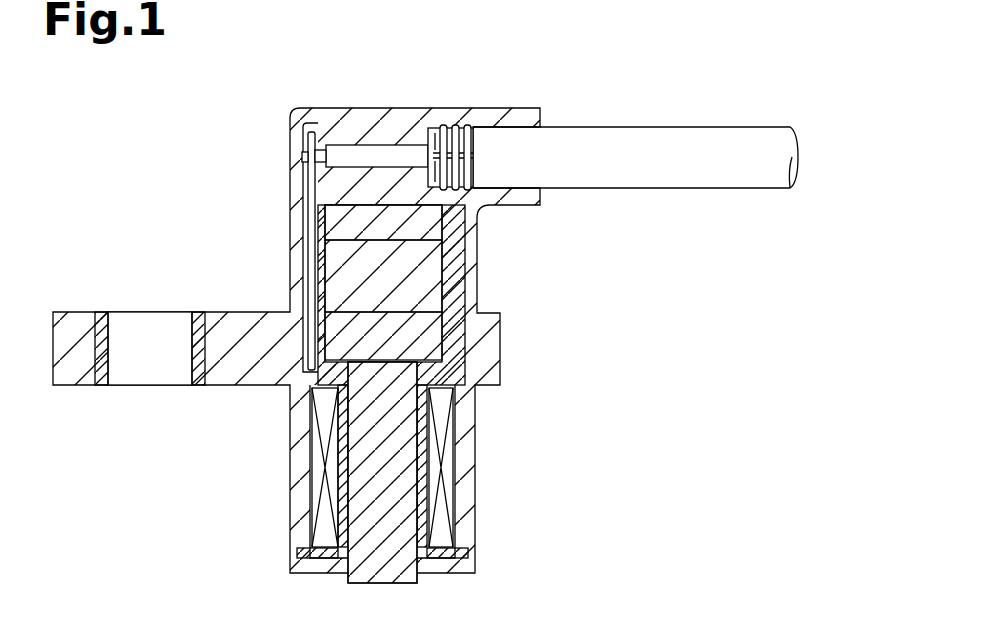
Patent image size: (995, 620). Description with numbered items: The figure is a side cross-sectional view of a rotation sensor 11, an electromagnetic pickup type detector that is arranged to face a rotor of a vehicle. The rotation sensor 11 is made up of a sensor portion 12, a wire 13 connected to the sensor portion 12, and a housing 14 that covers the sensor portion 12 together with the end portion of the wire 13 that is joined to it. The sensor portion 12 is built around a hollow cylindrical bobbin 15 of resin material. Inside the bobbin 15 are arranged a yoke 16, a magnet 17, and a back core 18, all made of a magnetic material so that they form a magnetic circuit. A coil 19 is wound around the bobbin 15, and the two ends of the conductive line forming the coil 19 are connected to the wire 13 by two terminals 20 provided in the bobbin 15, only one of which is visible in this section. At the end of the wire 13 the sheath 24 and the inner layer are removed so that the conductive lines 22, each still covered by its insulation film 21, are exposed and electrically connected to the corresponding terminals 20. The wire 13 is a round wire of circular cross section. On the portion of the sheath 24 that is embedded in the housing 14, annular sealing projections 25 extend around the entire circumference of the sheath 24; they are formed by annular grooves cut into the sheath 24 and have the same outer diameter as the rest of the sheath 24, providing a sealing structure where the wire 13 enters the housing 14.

The rotation sensor 11 is at (600, 93).
The sensor portion 12 is at (393, 583).
The wire 13 is at (686, 127).
The housing 14 is at (375, 108).
The bobbin 15 is at (457, 295).
The yoke 16 is at (370, 568).
The magnet 17 is at (427, 340).
The back core 18 is at (433, 257).
The coil 19 is at (443, 472).
The terminal 20 is at (303, 123).
The insulation film 21 is at (384, 157).
The conductive line 22 is at (302, 157).
The sheath 24 is at (598, 136).
The sealing projection 25 is at (459, 128).